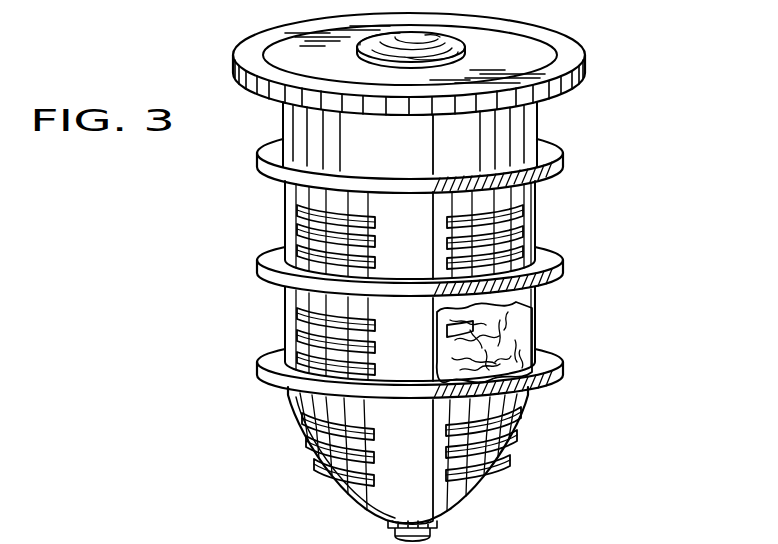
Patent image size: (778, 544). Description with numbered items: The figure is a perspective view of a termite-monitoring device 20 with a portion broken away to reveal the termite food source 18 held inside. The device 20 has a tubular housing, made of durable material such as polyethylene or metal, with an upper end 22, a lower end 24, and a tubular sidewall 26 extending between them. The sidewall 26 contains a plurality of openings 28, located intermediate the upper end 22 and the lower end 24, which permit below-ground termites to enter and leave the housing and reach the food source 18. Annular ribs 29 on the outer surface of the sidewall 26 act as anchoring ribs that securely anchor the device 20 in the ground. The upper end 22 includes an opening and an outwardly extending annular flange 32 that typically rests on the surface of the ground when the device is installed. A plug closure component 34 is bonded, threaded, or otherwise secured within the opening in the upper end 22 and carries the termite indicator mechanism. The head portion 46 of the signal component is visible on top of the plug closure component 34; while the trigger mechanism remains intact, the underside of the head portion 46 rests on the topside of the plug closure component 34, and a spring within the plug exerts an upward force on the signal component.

The termite-monitoring device 20 is at (622, 132).
The upper end 22 is at (222, 67).
The plug closure component 34 is at (294, 32).
The head portion 46 is at (440, 36).
The annular flange 32 is at (582, 52).
The annular ribs 29 is at (262, 148).
The openings 28 is at (298, 224).
The tubular sidewall 26 is at (276, 302).
The termite food source 18 is at (537, 322).
The lower end 24 is at (470, 503).